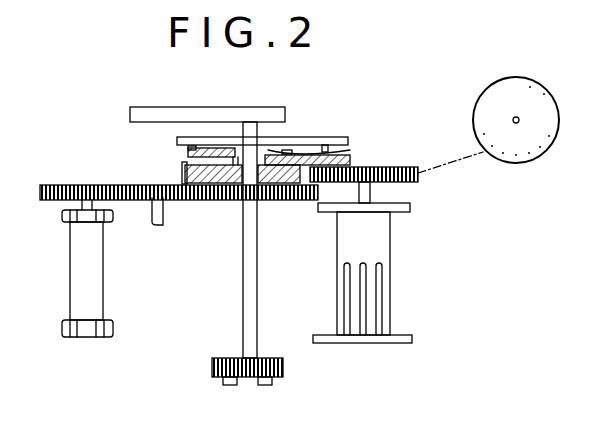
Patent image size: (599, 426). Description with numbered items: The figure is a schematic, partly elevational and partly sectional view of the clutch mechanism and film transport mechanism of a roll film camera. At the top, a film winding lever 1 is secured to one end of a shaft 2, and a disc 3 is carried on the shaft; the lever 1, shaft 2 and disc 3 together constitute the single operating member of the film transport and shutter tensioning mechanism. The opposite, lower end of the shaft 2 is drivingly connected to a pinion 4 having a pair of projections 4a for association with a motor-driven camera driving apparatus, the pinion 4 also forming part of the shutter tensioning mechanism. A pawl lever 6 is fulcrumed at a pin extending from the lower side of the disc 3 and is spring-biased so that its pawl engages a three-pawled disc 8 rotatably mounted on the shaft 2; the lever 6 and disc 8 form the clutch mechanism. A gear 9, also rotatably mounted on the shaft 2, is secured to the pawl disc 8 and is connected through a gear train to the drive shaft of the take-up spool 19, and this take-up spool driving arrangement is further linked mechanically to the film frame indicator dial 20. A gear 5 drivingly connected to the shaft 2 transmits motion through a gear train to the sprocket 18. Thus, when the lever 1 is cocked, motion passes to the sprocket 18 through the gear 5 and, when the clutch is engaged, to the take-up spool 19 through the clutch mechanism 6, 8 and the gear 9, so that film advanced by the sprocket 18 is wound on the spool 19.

The film winding lever 1 is at (132, 115).
The shaft 2 is at (252, 278).
The disc 3 is at (290, 137).
The pinion 4 is at (238, 368).
The projections 4a is at (265, 381).
The gear 5 is at (222, 200).
The pawl lever 6 is at (188, 151).
The three-pawled disc 8 is at (292, 153).
The gear 9 is at (276, 200).
The sprocket 18 is at (83, 270).
The take-up spool 19 is at (382, 233).
The film frame indicator dial 20 is at (517, 150).